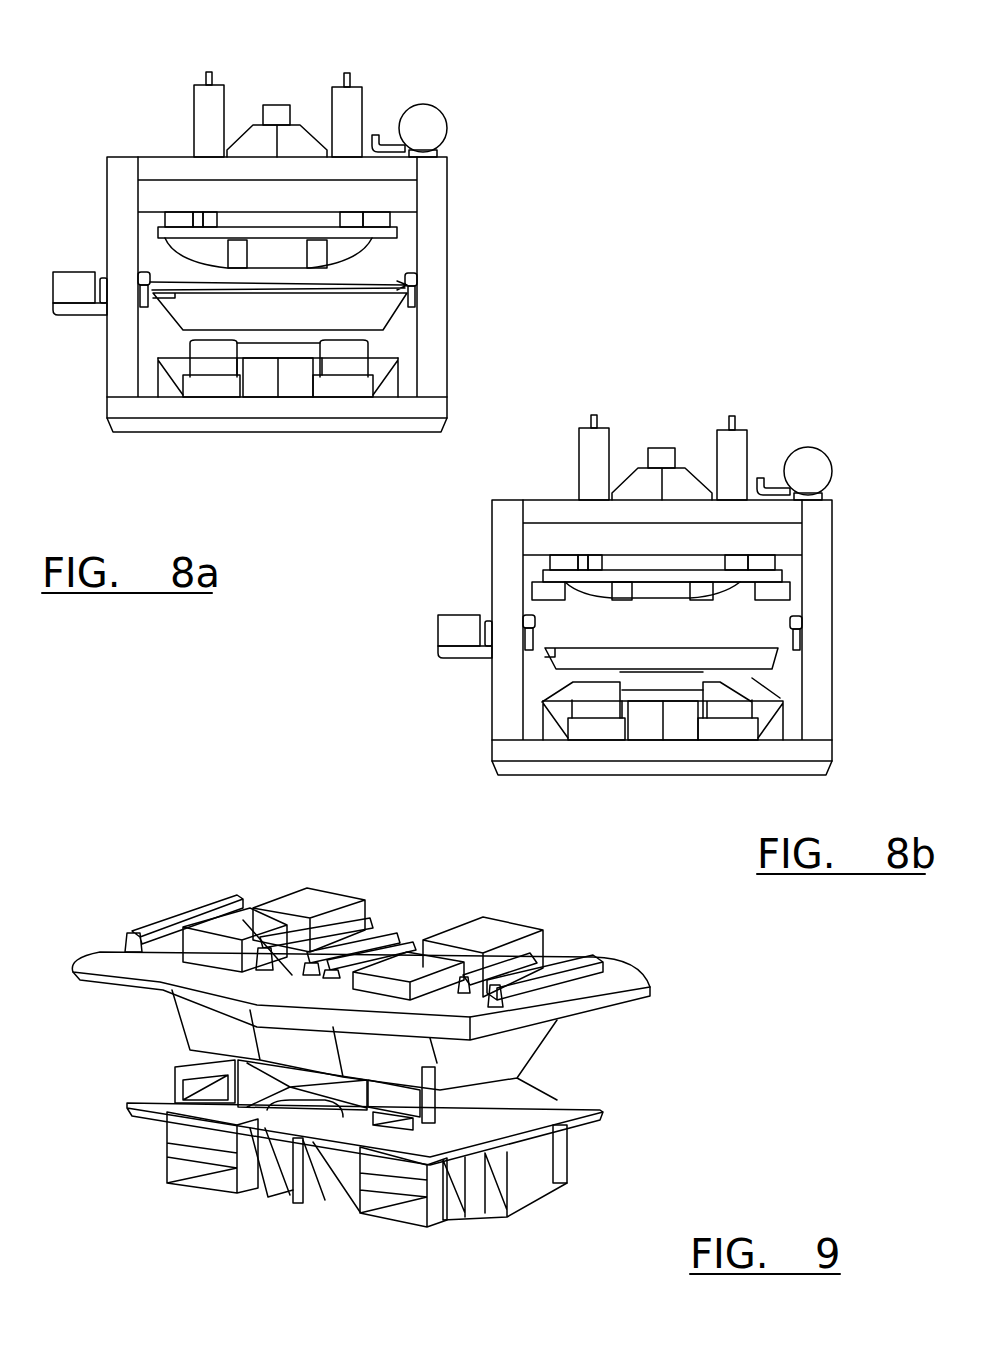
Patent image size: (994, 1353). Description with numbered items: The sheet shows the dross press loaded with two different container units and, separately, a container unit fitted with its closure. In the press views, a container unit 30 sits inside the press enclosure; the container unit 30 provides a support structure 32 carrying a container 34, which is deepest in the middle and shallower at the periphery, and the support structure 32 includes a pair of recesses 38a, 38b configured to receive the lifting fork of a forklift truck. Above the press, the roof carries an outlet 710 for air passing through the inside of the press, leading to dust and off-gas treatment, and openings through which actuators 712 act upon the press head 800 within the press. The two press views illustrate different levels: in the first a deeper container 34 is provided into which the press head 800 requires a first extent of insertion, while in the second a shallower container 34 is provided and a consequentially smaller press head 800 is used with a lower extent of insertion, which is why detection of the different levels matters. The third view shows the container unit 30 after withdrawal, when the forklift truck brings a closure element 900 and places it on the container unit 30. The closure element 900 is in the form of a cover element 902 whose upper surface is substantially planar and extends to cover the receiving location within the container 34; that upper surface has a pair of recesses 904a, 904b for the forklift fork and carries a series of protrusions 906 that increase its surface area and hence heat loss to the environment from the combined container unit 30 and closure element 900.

In FIG. 8a, the container unit 30 is at (340, 300).
In FIG. 8a, the support structure 32 is at (300, 397).
In FIG. 9, the support structure 32 is at (270, 1208).
In FIG. 8a, the container 34 is at (335, 268).
In FIG. 8b, the container 34 is at (720, 662).
In FIG. 9, the container 34 is at (493, 1062).
In FIG. 8a, the recess 38a is at (210, 385).
In FIG. 9, the recess 38a is at (213, 1180).
In FIG. 8a, the recess 38b is at (348, 385).
In FIG. 9, the recess 38b is at (407, 1213).
In FIG. 8a, the outlet 710 is at (277, 112).
In FIG. 8a, the actuator 712 is at (205, 112).
In FIG. 8a, the press head 800 is at (332, 225).
In FIG. 8b, the press head 800 is at (723, 592).
In FIG. 9, the closure element 900 is at (580, 928).
In FIG. 9, the cover element 902 is at (207, 917).
In FIG. 9, the recess 904a is at (205, 967).
In FIG. 9, the recess 904b is at (385, 998).
In FIG. 9, the protrusion 906 is at (373, 925).